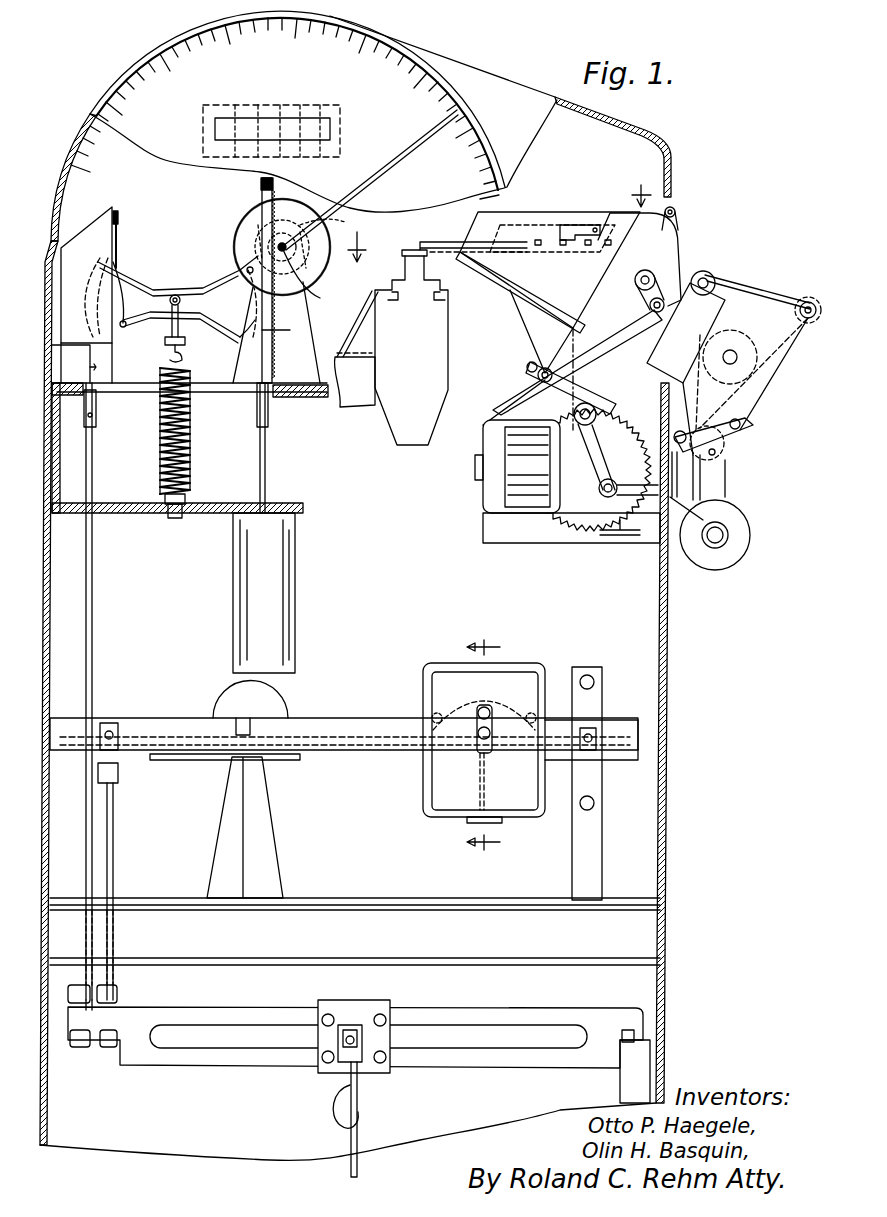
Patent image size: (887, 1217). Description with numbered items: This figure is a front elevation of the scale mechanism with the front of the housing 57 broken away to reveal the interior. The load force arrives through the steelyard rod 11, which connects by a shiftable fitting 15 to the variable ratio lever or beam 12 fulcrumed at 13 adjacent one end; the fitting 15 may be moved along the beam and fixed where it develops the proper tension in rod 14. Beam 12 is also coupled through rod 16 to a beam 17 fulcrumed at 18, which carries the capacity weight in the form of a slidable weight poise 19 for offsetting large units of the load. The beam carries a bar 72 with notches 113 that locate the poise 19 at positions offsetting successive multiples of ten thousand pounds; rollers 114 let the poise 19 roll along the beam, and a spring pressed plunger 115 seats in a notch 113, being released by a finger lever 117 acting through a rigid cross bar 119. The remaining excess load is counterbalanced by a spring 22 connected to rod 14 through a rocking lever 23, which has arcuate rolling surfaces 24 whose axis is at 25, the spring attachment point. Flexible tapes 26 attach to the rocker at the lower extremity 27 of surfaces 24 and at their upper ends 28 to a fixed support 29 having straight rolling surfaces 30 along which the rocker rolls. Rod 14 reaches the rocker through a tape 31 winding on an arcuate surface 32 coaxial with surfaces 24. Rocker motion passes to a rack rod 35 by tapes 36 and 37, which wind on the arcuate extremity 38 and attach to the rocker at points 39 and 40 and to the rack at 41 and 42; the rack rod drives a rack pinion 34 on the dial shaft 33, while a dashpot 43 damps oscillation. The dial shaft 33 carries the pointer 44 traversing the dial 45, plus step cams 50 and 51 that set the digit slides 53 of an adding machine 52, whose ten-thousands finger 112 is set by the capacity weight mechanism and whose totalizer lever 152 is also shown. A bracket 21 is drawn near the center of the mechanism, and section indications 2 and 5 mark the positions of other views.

The section line 2- 2 is at (494, 216).
The section line 5- 5 is at (483, 744).
The steelyard rod 11 is at (350, 1140).
The variable ratio lever or beam 12 is at (255, 1010).
The fulcrum 13 is at (625, 1032).
The rod 14 is at (84, 828).
The fitting 15 is at (360, 1010).
The rod 16 is at (114, 850).
The beam 17 is at (312, 718).
The fulcrum 18 is at (213, 717).
The capacity weight (slidable weight poise) 19 is at (525, 665).
The bracket 21 is at (391, 347).
The spring 22 is at (190, 425).
The rocking lever (rocker) 23 is at (152, 286).
The arcuate rolling surfaces 24 is at (124, 318).
The axis 25 is at (178, 296).
The flexible ribbons or tapes 26 is at (120, 240).
The lower extremity of surfaces 24 27 is at (123, 326).
The upper ends of tapes 26 28 is at (116, 212).
The fixed support 29 is at (98, 235).
The straight rolling surfaces 30 is at (108, 345).
The flexible tape 31 is at (95, 400).
The arcuate surface 32 is at (92, 280).
The dial shaft 33 is at (312, 277).
The rack pinion 34 is at (330, 226).
The rack rod 35 is at (276, 355).
The tapes 36 is at (248, 212).
The tape 37 is at (262, 365).
The arcuate extremity 38 is at (282, 333).
The connection point 39 is at (250, 335).
The connection point 40 is at (236, 266).
The connection point 41 is at (261, 184).
The connection point 42 is at (255, 428).
The dashpot 43 is at (296, 555).
The pointer 44 is at (385, 168).
The dial 45 is at (430, 72).
The step cam 50 is at (324, 268).
The step cam 51 is at (256, 238).
The adding machine 52 is at (505, 270).
The digit slides 53 is at (562, 247).
The housing 57 is at (645, 130).
The bar 72 is at (298, 757).
The fourth or ten-thousands finger 112 is at (446, 236).
The notches 113 is at (108, 770).
The rollers 114 is at (490, 690).
The spring pressed plunger 115 is at (480, 786).
The finger lever 117 is at (476, 722).
The rigid cross bar 119 is at (556, 240).
The totalizer lever 152 is at (676, 213).